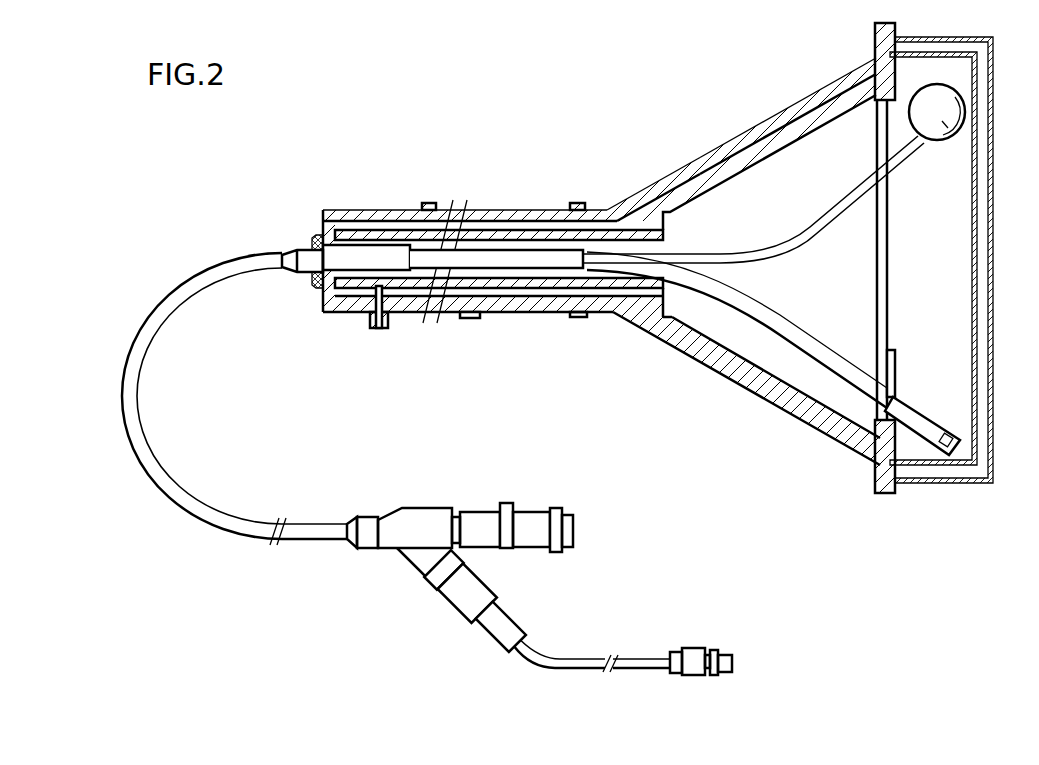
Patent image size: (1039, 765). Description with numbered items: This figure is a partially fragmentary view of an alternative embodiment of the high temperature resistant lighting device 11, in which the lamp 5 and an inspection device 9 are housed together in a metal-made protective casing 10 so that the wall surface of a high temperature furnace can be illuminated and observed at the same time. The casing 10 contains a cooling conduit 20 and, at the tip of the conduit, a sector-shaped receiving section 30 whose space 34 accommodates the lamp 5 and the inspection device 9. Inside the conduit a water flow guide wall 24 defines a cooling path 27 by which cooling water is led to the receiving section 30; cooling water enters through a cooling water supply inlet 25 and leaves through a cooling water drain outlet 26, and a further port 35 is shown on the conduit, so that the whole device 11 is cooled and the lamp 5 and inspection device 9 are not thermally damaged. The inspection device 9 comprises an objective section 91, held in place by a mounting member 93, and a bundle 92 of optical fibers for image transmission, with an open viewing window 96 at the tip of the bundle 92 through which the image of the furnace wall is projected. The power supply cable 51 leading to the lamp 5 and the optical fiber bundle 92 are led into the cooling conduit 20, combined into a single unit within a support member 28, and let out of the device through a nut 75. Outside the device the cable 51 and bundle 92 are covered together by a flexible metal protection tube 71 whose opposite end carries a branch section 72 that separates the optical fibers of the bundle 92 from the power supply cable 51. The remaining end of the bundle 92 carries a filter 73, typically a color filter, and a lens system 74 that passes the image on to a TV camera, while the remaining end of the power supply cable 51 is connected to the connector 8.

The lamp 5 is at (963, 112).
The connector 8 is at (693, 652).
The inspection device 9 is at (826, 392).
The metal-made protective casing 10 is at (593, 176).
The high temperature resistant lighting device 11 is at (661, 91).
The cooling conduit 20 is at (530, 203).
The water flow guide wall 24 is at (494, 232).
The cooling water supply inlet 25 is at (432, 203).
The cooling water drain outlet 26 is at (470, 318).
The cooling path 27 is at (642, 213).
The support member 28 is at (521, 270).
The receiving section 30 is at (753, 127).
The space 34 is at (813, 133).
The passage 35 is at (380, 328).
The power supply cable 51 is at (822, 233).
The flexible metal protection tube 71 is at (132, 412).
The branch section 72 is at (412, 513).
The filter 73 is at (507, 505).
The lens system 74 is at (540, 513).
The nut 75 is at (313, 235).
The objective section 91 is at (918, 417).
The optical fiber bundle 92 is at (773, 307).
The mounting member 93 is at (897, 358).
The viewing window 96 is at (948, 433).